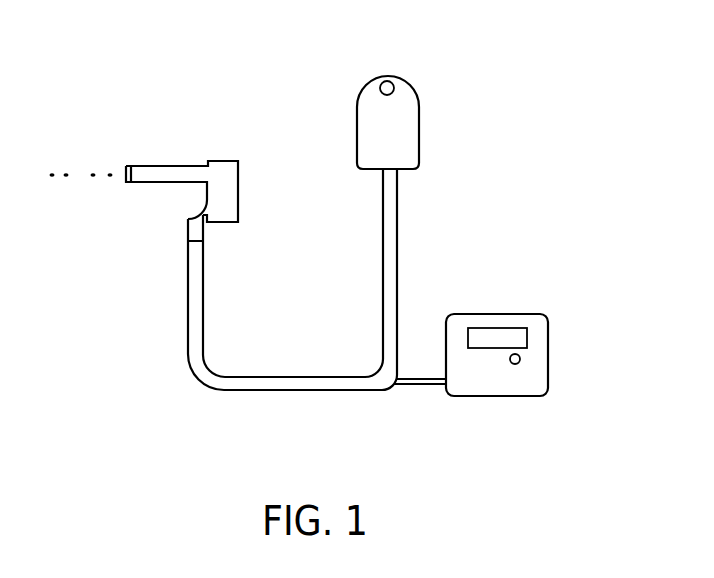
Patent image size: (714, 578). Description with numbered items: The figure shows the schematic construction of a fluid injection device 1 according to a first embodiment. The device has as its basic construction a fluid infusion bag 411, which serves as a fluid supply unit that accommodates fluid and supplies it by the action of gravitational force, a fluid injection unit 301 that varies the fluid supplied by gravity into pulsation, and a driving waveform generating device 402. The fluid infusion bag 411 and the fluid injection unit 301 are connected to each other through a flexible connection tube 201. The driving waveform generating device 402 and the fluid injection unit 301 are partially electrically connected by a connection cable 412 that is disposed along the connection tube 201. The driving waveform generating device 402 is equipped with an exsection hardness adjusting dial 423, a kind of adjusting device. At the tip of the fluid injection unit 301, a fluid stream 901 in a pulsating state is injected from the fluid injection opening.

The fluid injection device 1 is at (432, 68).
The connection tube 201 is at (205, 323).
The fluid injection unit 301 is at (221, 176).
The driving waveform generating device 402 is at (460, 325).
The fluid infusion bag 411 is at (393, 117).
The connection cable 412 is at (397, 392).
The exsection hardness adjusting dial 423 is at (515, 354).
The fluid stream 901 is at (67, 178).